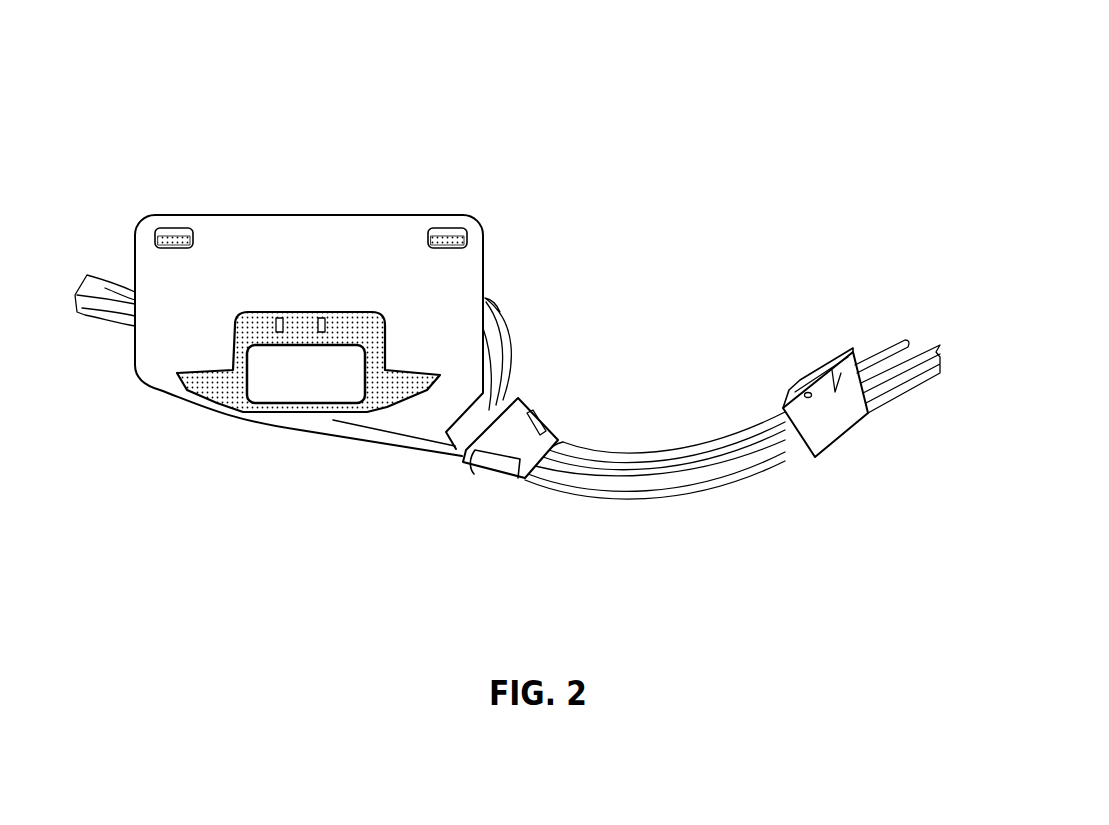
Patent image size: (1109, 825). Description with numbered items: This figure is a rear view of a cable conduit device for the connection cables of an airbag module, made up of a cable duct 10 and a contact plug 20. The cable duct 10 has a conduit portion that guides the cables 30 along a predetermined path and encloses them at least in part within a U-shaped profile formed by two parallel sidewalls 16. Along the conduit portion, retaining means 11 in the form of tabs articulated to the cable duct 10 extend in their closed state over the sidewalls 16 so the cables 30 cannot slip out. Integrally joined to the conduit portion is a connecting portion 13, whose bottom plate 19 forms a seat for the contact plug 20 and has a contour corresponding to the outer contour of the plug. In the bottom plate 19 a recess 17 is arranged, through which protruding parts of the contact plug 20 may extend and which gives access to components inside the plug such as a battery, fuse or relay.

The cable duct 10 is at (528, 523).
The retaining means 11 is at (520, 412).
The connecting portion 13 is at (293, 282).
The bottom plate 19 is at (342, 233).
The sidewalls 16 is at (700, 447).
The recess 17 is at (370, 412).
The contact plug 20 is at (228, 390).
The cables 30 is at (897, 380).